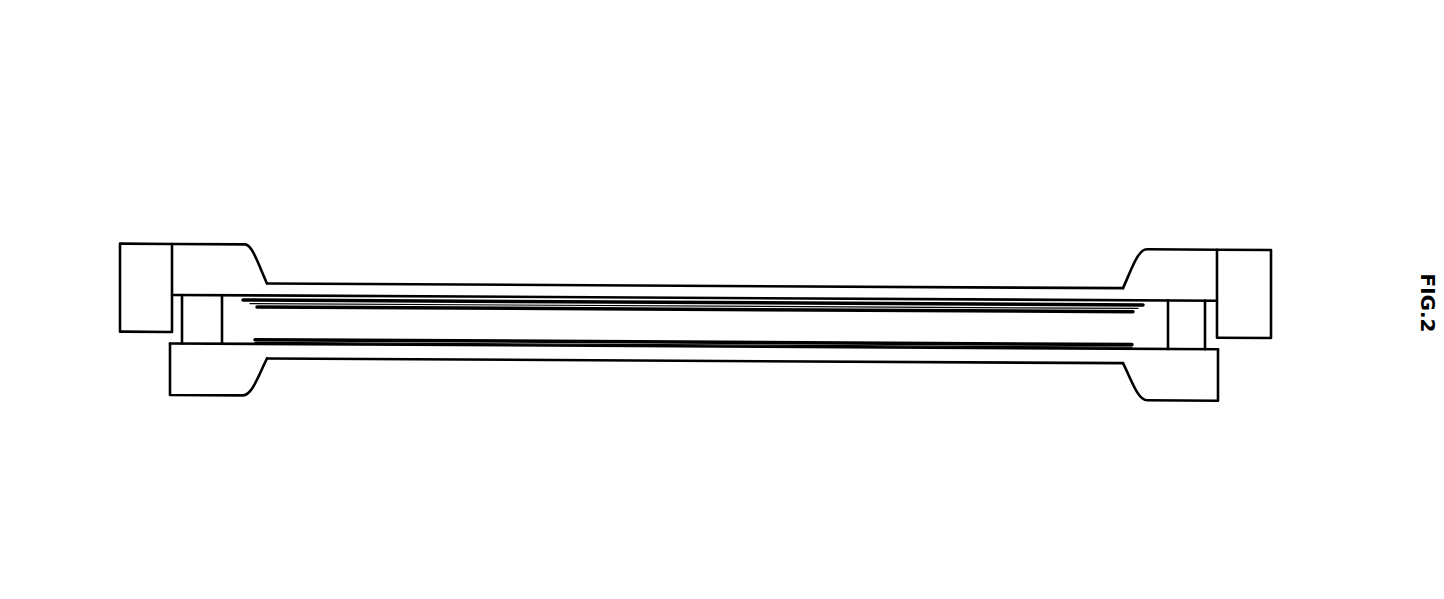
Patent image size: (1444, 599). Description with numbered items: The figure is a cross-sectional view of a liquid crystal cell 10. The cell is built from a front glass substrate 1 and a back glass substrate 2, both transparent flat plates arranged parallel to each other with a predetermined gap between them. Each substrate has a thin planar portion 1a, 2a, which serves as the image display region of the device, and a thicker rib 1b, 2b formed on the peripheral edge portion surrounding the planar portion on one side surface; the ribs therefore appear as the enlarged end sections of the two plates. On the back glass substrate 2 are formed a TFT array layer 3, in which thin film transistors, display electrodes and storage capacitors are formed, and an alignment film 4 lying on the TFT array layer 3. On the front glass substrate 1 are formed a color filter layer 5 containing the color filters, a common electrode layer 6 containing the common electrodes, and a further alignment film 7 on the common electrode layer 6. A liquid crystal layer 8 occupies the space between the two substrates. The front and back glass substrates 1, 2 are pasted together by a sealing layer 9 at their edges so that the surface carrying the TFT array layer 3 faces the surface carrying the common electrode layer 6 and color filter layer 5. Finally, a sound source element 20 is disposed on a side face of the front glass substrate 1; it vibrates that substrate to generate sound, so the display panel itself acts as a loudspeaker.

The liquid crystal cell 10 is at (821, 96).
The front glass substrate 1 is at (877, 281).
The planar portion 1a is at (732, 293).
The rib 1b is at (215, 257).
The back glass substrate 2 is at (873, 361).
The planar portion 2a is at (738, 347).
The rib 2b is at (214, 381).
The TFT array layer 3 is at (950, 343).
The alignment film 4 is at (1025, 340).
The color filter layer 5 is at (966, 296).
The common electrode layer 6 is at (1020, 300).
The alignment film 7 is at (1070, 303).
The liquid crystal layer 8 is at (455, 319).
The sealing layer 9 is at (200, 329).
The sound source element 20 is at (146, 267).